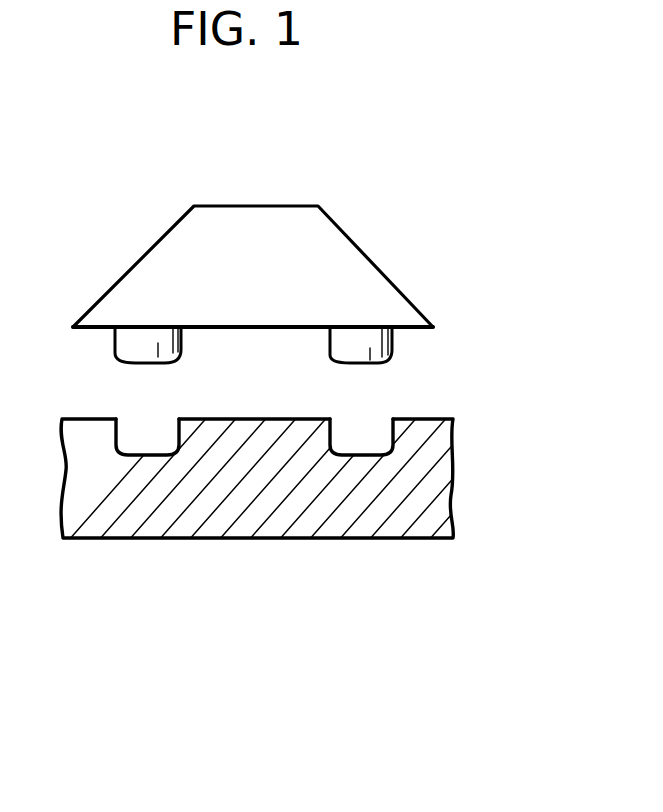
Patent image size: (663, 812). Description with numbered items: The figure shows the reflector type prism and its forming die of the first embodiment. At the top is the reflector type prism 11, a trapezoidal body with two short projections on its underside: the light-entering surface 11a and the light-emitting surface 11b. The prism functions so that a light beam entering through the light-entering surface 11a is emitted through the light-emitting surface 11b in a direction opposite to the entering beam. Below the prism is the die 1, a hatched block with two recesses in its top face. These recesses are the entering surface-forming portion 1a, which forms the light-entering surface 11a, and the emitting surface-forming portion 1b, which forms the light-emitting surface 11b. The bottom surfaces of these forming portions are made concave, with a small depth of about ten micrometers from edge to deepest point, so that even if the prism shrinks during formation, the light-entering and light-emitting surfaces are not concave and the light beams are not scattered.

The die 1 is at (277, 542).
The entering surface-forming portion 1a is at (375, 438).
The emitting surface-forming portion 1b is at (165, 438).
The reflector type prism 11 is at (257, 205).
The light-entering surface 11a is at (380, 362).
The light-emitting surface 11b is at (132, 363).